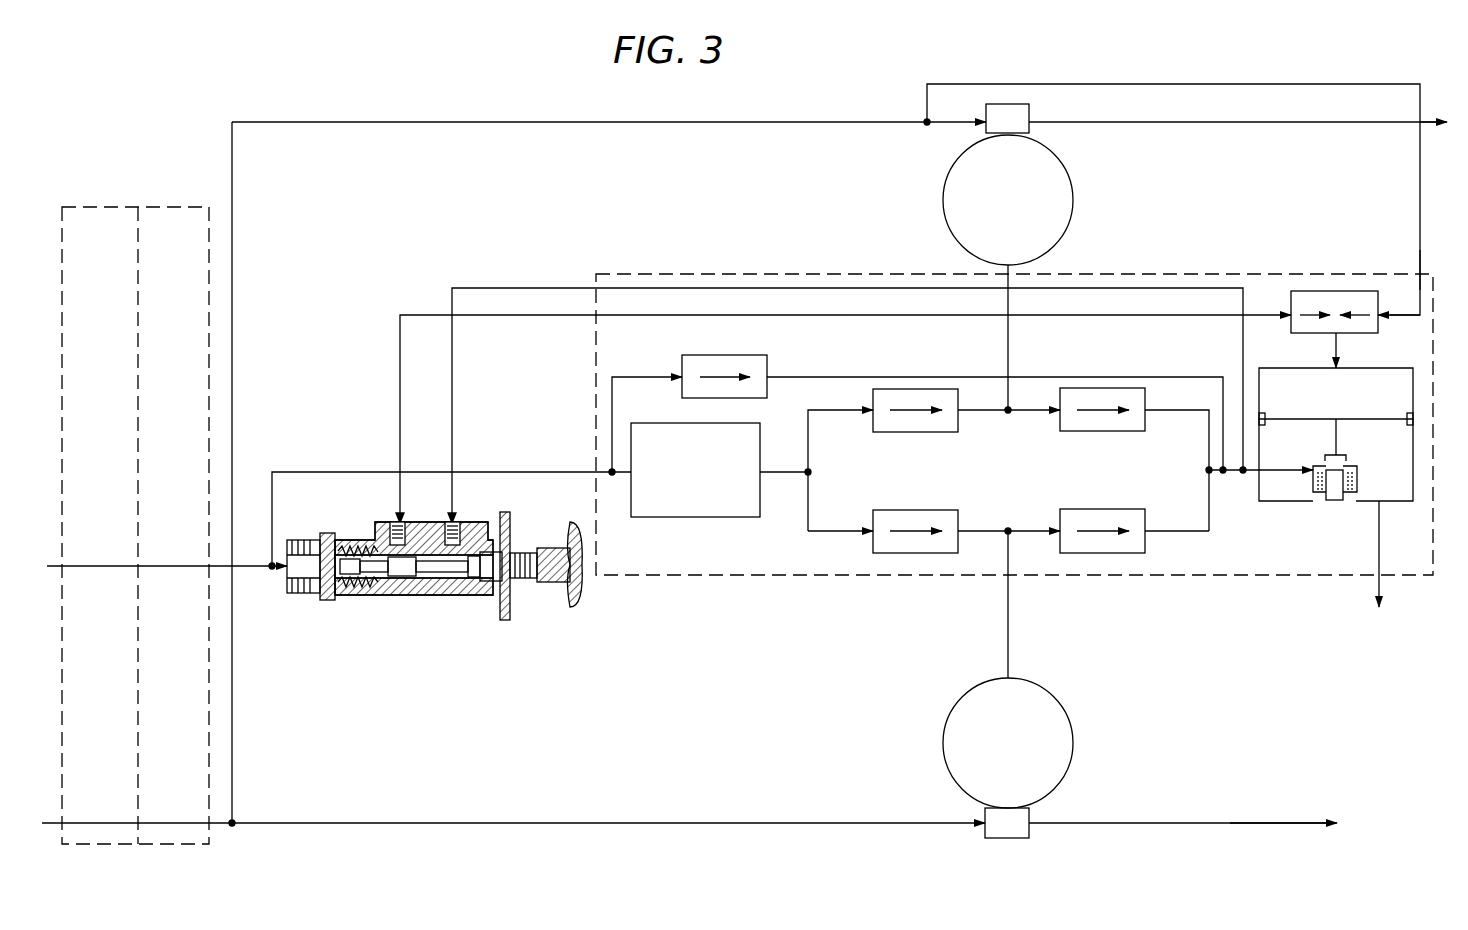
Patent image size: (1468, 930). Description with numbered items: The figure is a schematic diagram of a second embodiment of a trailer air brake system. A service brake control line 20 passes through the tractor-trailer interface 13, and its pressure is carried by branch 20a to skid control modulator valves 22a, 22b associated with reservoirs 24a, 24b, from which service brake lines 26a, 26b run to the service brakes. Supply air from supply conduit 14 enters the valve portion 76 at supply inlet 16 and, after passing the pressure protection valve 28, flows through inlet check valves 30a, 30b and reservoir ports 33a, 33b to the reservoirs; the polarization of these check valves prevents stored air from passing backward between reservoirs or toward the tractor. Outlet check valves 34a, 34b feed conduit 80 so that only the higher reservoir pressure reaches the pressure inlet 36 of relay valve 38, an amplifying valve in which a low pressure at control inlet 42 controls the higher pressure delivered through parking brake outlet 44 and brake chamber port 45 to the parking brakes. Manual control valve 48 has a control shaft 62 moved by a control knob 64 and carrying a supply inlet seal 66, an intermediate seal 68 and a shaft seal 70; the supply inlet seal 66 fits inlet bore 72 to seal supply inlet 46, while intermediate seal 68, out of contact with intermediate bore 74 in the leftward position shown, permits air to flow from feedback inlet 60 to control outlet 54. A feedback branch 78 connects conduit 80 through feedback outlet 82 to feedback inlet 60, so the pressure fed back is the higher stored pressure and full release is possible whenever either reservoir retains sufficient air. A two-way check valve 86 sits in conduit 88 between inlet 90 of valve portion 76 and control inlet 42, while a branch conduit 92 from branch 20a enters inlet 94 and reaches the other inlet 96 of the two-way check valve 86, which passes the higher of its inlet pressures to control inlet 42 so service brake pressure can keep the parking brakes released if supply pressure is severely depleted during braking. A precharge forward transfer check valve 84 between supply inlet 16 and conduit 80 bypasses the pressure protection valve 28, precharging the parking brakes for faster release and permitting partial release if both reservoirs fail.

The tractor-trailer interface 13 is at (108, 638).
The supply conduit 14 is at (118, 566).
The supply inlet 16 is at (610, 470).
The service brake control line 20 is at (214, 823).
The branch 20a is at (811, 123).
The skid control modulator valve 22a is at (1031, 110).
The skid control modulator valve 22b is at (1018, 840).
The reservoir 24a is at (1008, 200).
The reservoir 24b is at (1008, 743).
The service brake line 26a is at (1432, 110).
The service brake line 26b is at (1213, 823).
The pressure protection valve 28 is at (740, 517).
The inlet check valve 30a is at (945, 432).
The inlet check valve 30b is at (937, 509).
The reservoir port 33a is at (1012, 270).
The reservoir port 33b is at (1012, 580).
The outlet check valve 34a is at (1135, 432).
The outlet check valve 34b is at (1084, 509).
The pressure inlet 36 is at (1256, 474).
The relay valve 38 is at (1398, 503).
The control inlet 42 is at (1338, 368).
The parking brake outlet 44 is at (1375, 503).
The brake chamber port 45 is at (1382, 580).
The supply inlet 46 is at (286, 585).
The manual control valve 48 is at (437, 595).
The control outlet 54 is at (390, 522).
The feedback inlet 60 is at (452, 522).
The control shaft 62 is at (512, 560).
The control knob 64 is at (578, 596).
The supply inlet seal 66 is at (352, 590).
The intermediate seal 68 is at (398, 584).
The shaft seal 70 is at (477, 590).
The inlet bore 72 is at (384, 592).
The intermediate bore 74 is at (434, 596).
The valve portion 76 is at (1296, 565).
The feedback branch 78 is at (1170, 288).
The conduit 80 is at (1248, 473).
The feedback outlet 82 is at (597, 284).
The precharge forward transfer check valve 84 is at (752, 355).
The two-way check valve 86 is at (1291, 333).
The conduit 88 is at (880, 315).
The inlet 90 is at (598, 315).
The branch conduit 92 is at (1210, 84).
The inlet 94 is at (1418, 276).
The other inlet 96 is at (1381, 320).